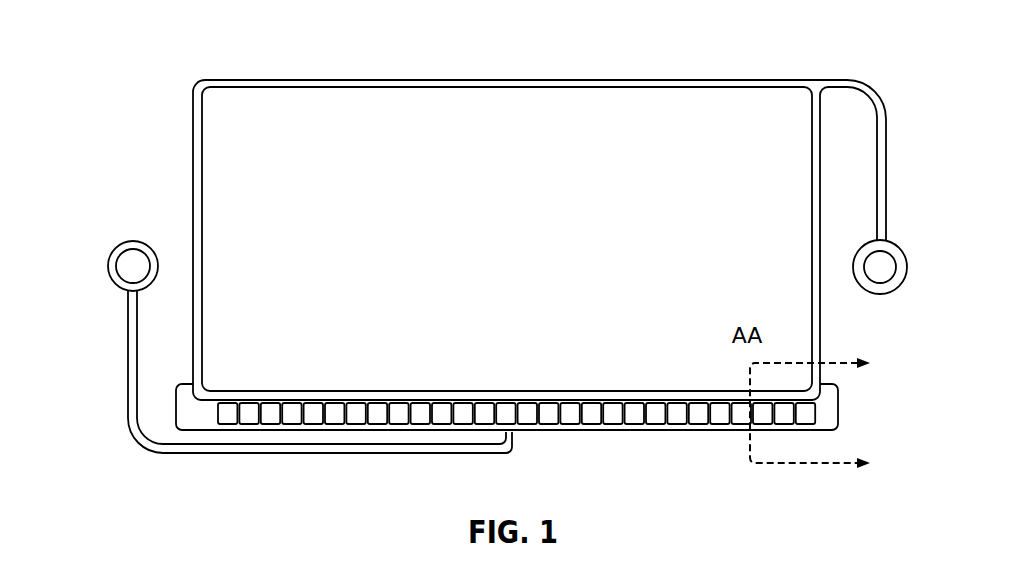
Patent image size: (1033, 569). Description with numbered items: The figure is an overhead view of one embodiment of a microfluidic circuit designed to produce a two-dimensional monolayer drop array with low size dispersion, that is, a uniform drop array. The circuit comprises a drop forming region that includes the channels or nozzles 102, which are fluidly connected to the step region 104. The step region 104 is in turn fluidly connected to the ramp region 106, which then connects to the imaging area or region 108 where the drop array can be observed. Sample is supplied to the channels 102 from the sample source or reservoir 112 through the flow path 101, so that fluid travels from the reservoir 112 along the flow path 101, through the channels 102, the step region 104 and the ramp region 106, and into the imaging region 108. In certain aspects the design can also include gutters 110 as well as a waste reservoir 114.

The flow path 101 is at (617, 433).
The channels or nozzles 102 is at (217, 410).
The step region 104 is at (205, 402).
The ramp region 106 is at (223, 392).
The imaging area or region 108 is at (335, 230).
The gutters 110 is at (272, 80).
The sample source or reservoir 112 is at (132, 268).
The waste reservoir 114 is at (880, 266).